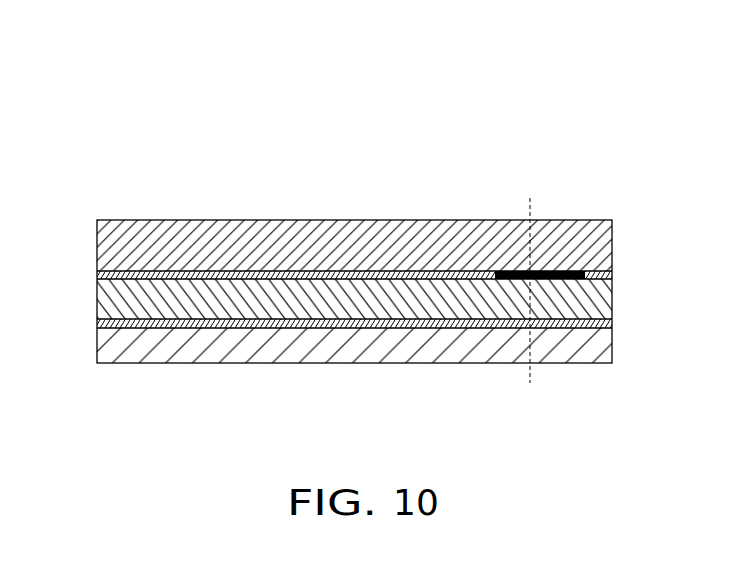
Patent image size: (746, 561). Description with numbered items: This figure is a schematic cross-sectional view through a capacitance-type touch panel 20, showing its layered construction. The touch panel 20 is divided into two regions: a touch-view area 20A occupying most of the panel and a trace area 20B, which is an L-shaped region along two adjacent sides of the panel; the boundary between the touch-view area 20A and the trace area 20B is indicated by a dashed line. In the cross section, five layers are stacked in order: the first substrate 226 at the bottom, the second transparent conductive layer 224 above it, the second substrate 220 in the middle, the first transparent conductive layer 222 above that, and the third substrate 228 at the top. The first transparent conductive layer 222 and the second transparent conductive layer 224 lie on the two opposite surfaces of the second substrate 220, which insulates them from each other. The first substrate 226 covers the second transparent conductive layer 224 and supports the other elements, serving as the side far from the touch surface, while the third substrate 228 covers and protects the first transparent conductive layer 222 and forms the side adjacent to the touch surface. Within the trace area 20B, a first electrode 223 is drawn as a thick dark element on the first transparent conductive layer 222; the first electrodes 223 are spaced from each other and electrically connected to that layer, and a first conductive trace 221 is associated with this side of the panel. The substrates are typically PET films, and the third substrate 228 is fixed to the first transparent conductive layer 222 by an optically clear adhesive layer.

The capacitance-type touch panel 20 is at (360, 207).
The touch-view area 20A is at (354, 272).
The trace area 20B is at (528, 274).
The second substrate 220 is at (593, 293).
The first conductive trace 221 is at (594, 245).
The first transparent conductive layer 222 is at (108, 275).
The first electrodes 223 is at (509, 270).
The second transparent conductive layer 224 is at (108, 322).
The first substrate 226 is at (600, 357).
The third substrate 228 is at (114, 251).